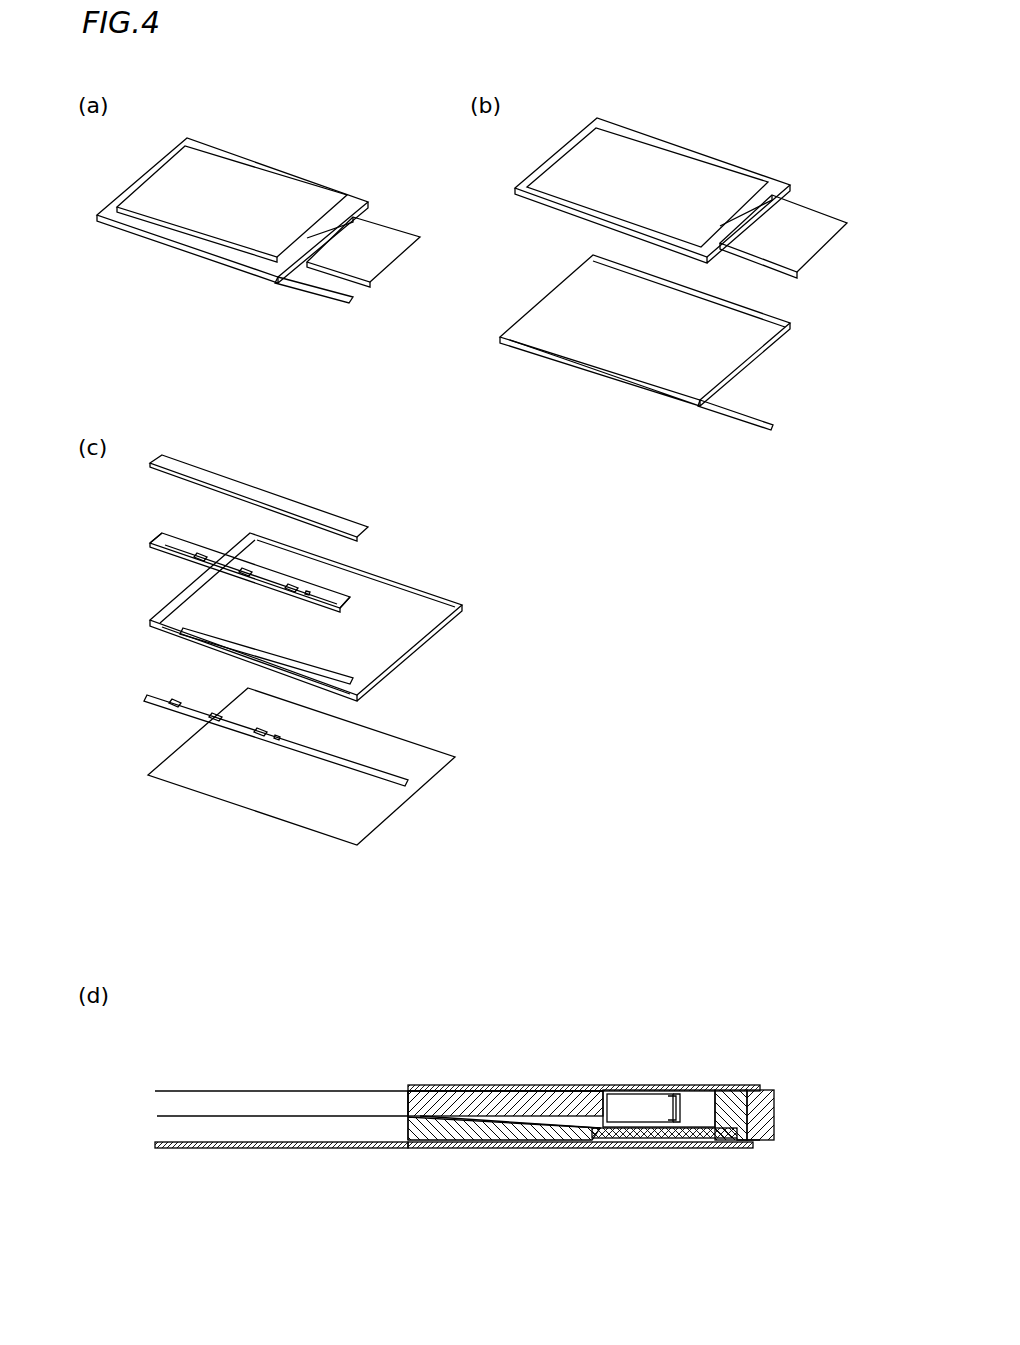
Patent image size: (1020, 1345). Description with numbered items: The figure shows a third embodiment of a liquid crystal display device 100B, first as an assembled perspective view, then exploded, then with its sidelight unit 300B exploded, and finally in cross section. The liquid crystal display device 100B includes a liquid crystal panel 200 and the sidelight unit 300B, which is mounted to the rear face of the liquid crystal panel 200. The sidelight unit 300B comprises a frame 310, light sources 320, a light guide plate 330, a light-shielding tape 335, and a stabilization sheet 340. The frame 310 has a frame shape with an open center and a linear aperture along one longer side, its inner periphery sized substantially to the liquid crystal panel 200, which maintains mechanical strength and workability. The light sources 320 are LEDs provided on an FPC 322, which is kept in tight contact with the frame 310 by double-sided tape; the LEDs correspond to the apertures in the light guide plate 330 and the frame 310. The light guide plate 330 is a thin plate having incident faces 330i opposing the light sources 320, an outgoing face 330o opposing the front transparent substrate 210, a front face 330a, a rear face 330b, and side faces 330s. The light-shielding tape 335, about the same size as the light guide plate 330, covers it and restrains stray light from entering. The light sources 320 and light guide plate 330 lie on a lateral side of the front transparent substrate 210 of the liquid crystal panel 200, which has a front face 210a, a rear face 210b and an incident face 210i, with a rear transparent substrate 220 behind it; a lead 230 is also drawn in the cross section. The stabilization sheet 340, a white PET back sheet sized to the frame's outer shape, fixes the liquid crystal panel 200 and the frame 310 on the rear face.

The liquid crystal display device 100B is at (355, 140).
The liquid crystal panel 200 is at (678, 172).
The sidelight unit 300B is at (590, 327).
The light-shielding tape 335 is at (322, 512).
The light guide plate 330 is at (153, 545).
The side faces 330s is at (155, 538).
The outgoing face 330o is at (180, 538).
The incident faces 330i is at (293, 586).
The front face 330a is at (483, 1090).
The rear face 330b is at (483, 1132).
The frame 310 is at (155, 613).
The light sources 320 is at (173, 700).
The FPC 322 is at (147, 699).
The stabilization sheet 340 is at (177, 780).
The front transparent substrate 210 is at (218, 1097).
The front face 210a is at (172, 1091).
The rear face 210b is at (183, 1120).
The incident face 210i is at (406, 1097).
The rear transparent substrate 220 is at (328, 1127).
The lead line 230 is at (157, 1116).